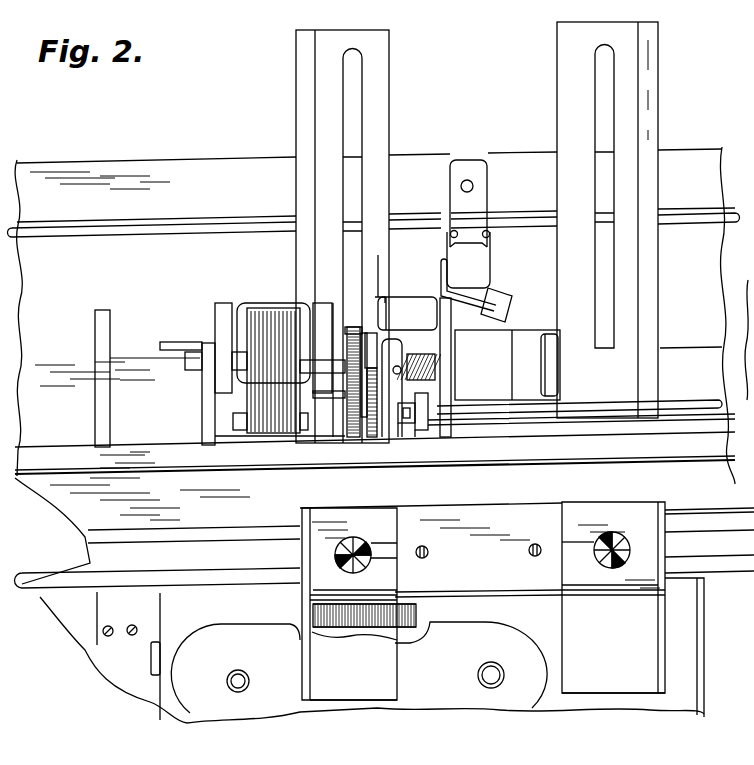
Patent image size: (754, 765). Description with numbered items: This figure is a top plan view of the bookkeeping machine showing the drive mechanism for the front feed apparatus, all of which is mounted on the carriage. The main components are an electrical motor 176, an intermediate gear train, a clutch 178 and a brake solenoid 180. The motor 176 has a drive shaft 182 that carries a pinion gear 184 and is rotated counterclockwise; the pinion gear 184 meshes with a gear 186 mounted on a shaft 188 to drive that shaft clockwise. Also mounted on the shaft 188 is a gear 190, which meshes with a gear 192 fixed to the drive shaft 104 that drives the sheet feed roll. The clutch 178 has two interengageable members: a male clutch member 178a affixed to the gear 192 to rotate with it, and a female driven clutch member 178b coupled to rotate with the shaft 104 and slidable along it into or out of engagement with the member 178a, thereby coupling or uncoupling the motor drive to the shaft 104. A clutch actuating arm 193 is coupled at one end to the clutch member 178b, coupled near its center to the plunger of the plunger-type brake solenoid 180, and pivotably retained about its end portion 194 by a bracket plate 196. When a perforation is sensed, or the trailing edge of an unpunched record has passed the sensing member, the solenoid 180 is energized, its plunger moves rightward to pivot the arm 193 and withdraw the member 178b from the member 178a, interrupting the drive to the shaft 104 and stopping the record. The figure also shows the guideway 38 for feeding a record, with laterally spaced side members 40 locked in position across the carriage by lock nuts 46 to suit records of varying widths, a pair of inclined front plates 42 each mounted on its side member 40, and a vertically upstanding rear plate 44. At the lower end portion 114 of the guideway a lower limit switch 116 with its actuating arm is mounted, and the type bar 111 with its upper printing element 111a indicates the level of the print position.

The lower end portion of the record guideway 114 is at (302, 88).
The lower limit switch 116 is at (458, 241).
The electrical motor 176 is at (261, 316).
The drive shaft 182 is at (341, 330).
The pinion gear 184 is at (350, 327).
The gear 186 is at (350, 410).
The gear 192 is at (371, 437).
The shaft 188 is at (398, 357).
The gear 190 is at (405, 313).
The end portion 194 is at (390, 258).
The bracket plate 196 is at (432, 298).
The clutch actuating arm 193 is at (435, 373).
The driven clutch member 178b is at (405, 400).
The clutch member 178a is at (393, 431).
The clutch 178 is at (415, 442).
The brake solenoid 180 is at (566, 358).
The drive shaft 104 is at (677, 404).
The side members 40 is at (305, 603).
The lock nuts 46 is at (348, 544).
The rear plate 44 is at (340, 594).
The type bar 111 is at (422, 613).
The upper printing element 111a is at (414, 610).
The inclined front plates 42 is at (380, 677).
The guideway 38 is at (652, 633).